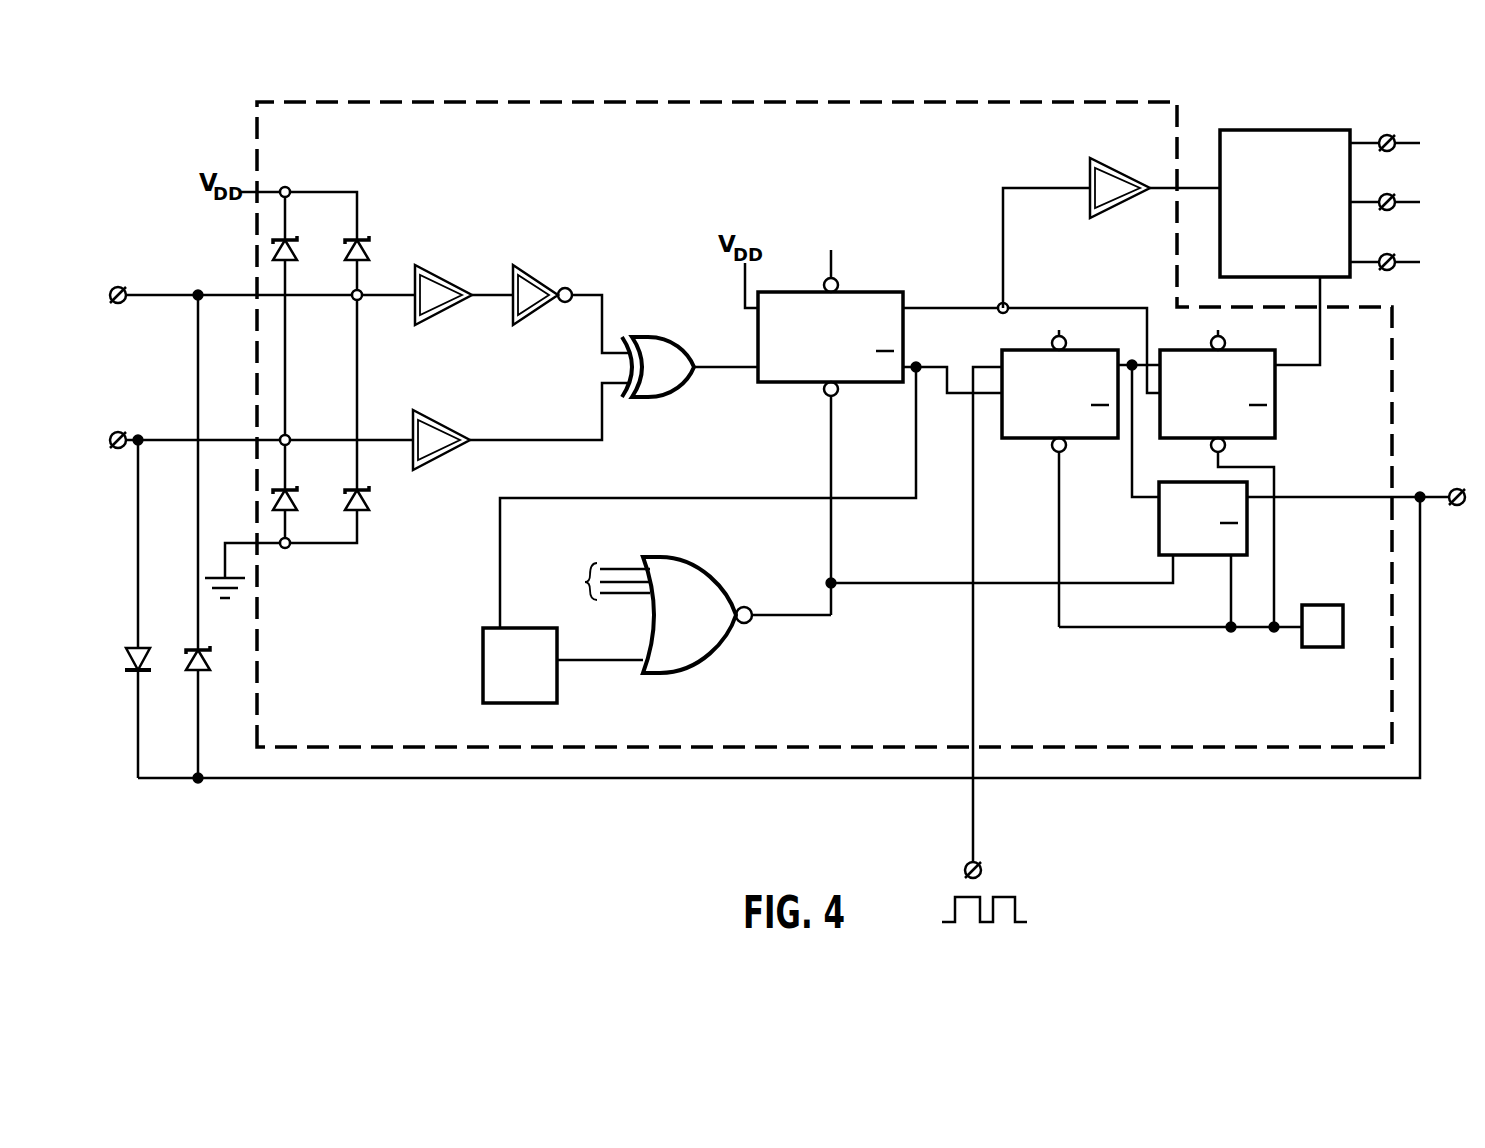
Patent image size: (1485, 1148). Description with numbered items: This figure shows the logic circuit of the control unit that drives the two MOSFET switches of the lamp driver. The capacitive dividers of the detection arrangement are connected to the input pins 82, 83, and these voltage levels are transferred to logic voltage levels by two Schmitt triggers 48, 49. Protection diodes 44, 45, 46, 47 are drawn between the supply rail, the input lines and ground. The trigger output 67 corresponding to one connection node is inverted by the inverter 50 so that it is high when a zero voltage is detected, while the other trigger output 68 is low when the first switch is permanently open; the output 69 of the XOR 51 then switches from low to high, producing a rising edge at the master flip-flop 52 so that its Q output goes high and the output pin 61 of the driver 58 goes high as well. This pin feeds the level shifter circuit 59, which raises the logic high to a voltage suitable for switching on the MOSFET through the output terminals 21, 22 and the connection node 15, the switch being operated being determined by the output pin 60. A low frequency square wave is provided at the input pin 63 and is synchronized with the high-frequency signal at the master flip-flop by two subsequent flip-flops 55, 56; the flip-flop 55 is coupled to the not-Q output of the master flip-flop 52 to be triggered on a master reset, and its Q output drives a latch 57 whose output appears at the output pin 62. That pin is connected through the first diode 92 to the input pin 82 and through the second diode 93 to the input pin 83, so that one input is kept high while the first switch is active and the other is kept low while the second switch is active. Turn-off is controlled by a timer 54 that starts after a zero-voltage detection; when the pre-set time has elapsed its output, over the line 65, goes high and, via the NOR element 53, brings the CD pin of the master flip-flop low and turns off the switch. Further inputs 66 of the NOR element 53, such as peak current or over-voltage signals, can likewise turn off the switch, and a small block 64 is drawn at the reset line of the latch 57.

The input pin 82 is at (120, 285).
The input pin 83 is at (118, 452).
The protection diode 44 is at (273, 252).
The protection diode 45 is at (273, 500).
The protection diode 46 is at (370, 252).
The protection diode 47 is at (370, 500).
The Schmitt trigger 48 is at (448, 283).
The Schmitt trigger 49 is at (445, 428).
The inverter 50 is at (538, 280).
The XOR 51 is at (650, 396).
The master flip-flop 52 is at (866, 290).
The NOR element 53 is at (728, 592).
The timer 54 is at (483, 661).
The flip-flop 55 is at (1085, 440).
The flip-flop 56 is at (1277, 392).
The latch 57 is at (1203, 555).
The driver 58 is at (1115, 172).
The level shifter circuit 59 is at (1315, 140).
The output pin 60 is at (1322, 348).
The output pin 61 is at (1198, 186).
The output pin 62 is at (1460, 488).
The input pin 63 is at (981, 870).
The reset block 64 is at (1325, 643).
The connection line 65 is at (600, 662).
The NOR gate inputs 66 is at (583, 582).
The trigger output 67 is at (491, 300).
The output 68 is at (515, 437).
The output 69 is at (725, 372).
The first diode 92 is at (195, 645).
The second diode 93 is at (135, 645).
The output terminal 21 is at (1405, 145).
The connection node 15 is at (1405, 204).
The output terminal 22 is at (1405, 264).